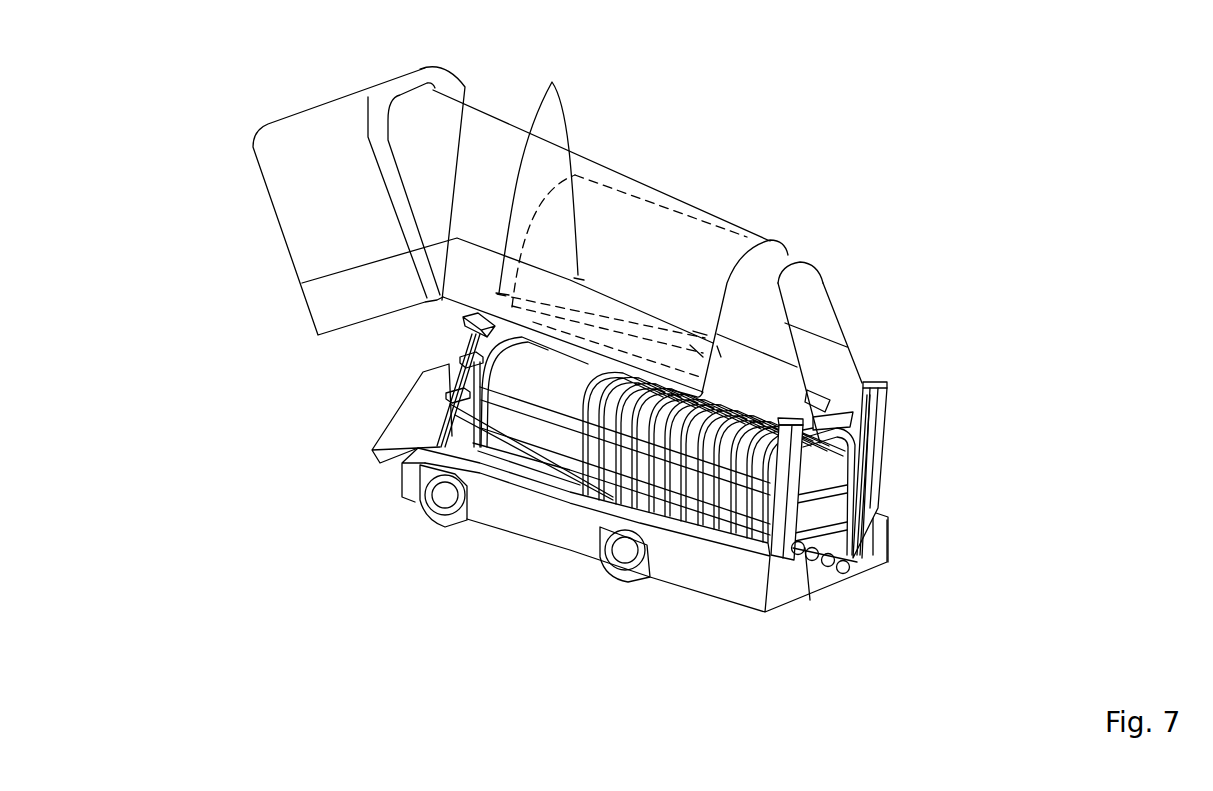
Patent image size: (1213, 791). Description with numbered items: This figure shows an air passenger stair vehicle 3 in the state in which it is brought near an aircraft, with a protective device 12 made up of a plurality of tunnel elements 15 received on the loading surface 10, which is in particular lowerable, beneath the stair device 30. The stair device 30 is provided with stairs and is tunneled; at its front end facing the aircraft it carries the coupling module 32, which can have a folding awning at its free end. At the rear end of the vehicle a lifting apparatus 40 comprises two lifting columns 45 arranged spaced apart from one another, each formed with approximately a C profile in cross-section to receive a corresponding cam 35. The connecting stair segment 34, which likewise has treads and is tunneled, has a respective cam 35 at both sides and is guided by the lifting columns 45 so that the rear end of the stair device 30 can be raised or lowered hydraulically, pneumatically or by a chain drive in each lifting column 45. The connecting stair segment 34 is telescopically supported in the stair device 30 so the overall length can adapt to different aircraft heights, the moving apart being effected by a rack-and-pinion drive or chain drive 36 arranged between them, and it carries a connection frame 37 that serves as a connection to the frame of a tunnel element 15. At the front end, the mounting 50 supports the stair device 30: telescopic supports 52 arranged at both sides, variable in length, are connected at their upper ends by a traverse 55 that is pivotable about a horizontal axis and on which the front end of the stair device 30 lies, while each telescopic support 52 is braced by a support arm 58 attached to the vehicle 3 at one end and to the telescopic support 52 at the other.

The air passenger stair vehicle 3 is at (569, 561).
The loading surface 10 is at (819, 576).
The protective device 12 is at (689, 485).
The tunnel element 15 is at (852, 431).
The stair device 30 is at (733, 186).
The coupling module 32 is at (290, 218).
The connecting stair segment 34 is at (808, 303).
The cam 35 is at (868, 386).
The rack-and-pinion drive or chain drive 36 is at (552, 82).
The connection frame 37 is at (798, 260).
The lifting apparatus 40 is at (891, 433).
The lifting column 45 is at (876, 486).
The mounting 50 is at (466, 322).
The telescopic support 52 is at (443, 413).
The traverse 55 is at (452, 340).
The support arm 58 is at (535, 451).